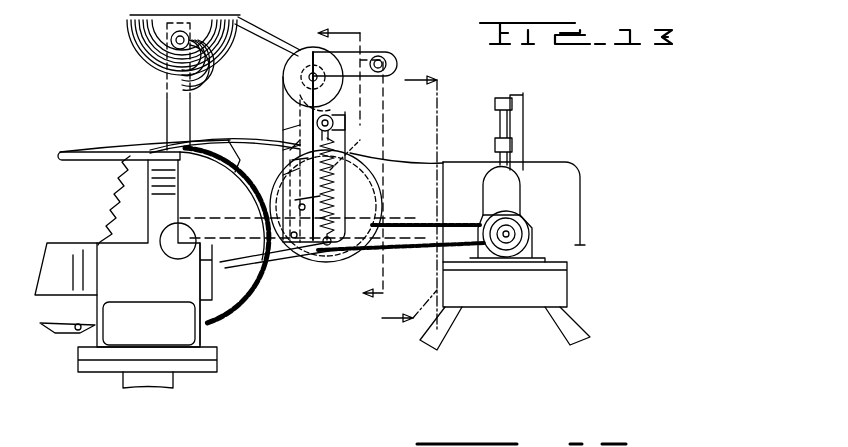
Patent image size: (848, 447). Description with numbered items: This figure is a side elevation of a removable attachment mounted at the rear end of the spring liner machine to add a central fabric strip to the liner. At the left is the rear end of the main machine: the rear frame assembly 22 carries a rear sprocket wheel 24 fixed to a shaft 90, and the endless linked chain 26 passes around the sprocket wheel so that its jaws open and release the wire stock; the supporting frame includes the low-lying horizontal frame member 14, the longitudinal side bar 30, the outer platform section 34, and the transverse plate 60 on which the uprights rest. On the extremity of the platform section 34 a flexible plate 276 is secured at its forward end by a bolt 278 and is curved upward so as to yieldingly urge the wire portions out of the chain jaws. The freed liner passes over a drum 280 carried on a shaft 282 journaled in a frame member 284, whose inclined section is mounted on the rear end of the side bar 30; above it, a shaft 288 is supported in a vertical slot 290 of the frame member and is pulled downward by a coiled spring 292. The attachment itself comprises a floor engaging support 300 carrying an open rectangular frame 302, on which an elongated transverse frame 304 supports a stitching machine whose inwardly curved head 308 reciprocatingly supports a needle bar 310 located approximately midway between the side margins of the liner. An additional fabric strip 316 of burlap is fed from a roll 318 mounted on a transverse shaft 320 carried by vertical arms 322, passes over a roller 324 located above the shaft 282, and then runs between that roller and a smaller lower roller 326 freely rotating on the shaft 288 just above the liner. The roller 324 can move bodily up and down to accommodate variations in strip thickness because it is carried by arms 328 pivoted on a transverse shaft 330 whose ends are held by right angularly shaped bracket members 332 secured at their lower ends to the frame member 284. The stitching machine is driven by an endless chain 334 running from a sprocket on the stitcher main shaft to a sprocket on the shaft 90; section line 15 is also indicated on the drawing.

The horizontal frame member 14 is at (338, 170).
The section line 15- 15 is at (411, 203).
The rear frame assembly 22 is at (118, 312).
The rear sprocket wheel 24 is at (116, 210).
The endless linked chain 26 is at (246, 310).
The side bar 30 is at (62, 275).
The outer platform section 34 is at (115, 158).
The transverse plate 60 is at (210, 366).
The shaft 90 is at (172, 246).
The flexible plate 276 is at (221, 148).
The bolt 278 is at (164, 150).
The drum 280 is at (366, 192).
The shaft 282 is at (345, 202).
The frame member 284 is at (300, 256).
The shaft 288 is at (347, 137).
The vertical slot 290 is at (340, 119).
The coiled spring 292 is at (336, 174).
The floor engaging support 300 is at (580, 326).
The open rectangular frame 302 is at (556, 287).
The elongated frame 304 is at (540, 259).
The head 308 is at (518, 150).
The needle bar 310 is at (505, 125).
The additional fabric strip 316 is at (292, 43).
The roll 318 is at (138, 64).
The transverse shaft 320 is at (172, 41).
The vertical arm 322 is at (168, 108).
The roller 324 is at (286, 84).
The lower roller 326 is at (332, 109).
The arm 328 is at (352, 48).
The transverse shaft 330 is at (386, 58).
The bracket member 332 is at (300, 132).
The endless chain 334 is at (463, 226).